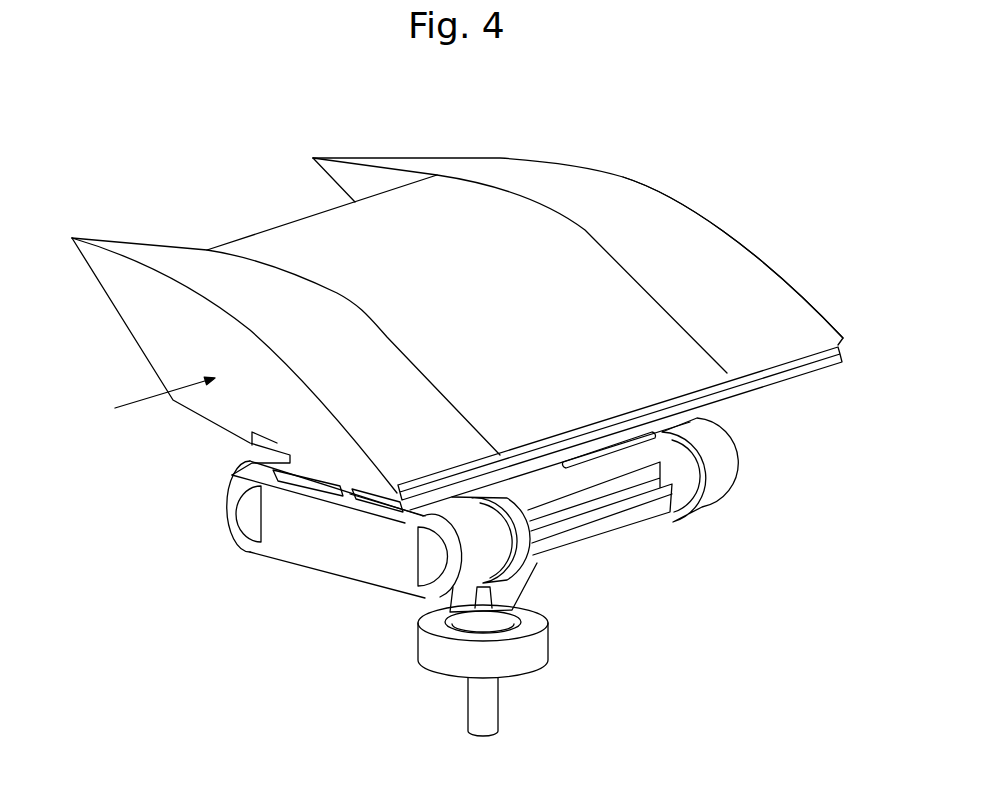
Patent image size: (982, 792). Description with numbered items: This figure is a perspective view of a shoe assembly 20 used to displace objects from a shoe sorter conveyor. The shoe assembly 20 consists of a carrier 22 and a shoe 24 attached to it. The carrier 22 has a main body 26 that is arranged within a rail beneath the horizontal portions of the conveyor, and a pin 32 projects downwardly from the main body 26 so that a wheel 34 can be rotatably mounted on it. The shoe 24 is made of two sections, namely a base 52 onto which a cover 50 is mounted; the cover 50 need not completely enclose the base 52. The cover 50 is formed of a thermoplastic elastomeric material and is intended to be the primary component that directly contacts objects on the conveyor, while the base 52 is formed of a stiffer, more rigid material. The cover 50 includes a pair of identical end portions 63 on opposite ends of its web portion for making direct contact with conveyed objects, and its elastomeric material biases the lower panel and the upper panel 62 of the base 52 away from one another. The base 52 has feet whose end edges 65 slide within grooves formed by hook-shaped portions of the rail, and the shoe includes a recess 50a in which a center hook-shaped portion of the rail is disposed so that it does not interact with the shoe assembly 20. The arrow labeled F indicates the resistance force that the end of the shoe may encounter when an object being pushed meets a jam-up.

The shoe assembly 20 is at (690, 156).
The carrier 22 is at (358, 607).
The shoe 24 is at (740, 252).
The main body 26 is at (308, 572).
The pin 32 is at (492, 718).
The wheel 34 is at (538, 650).
The cover 50 is at (383, 148).
The recess 50a is at (273, 452).
The base 52 is at (265, 218).
The upper panel 62 is at (508, 232).
The end portions 63 is at (160, 312).
The end edges 65 is at (810, 375).